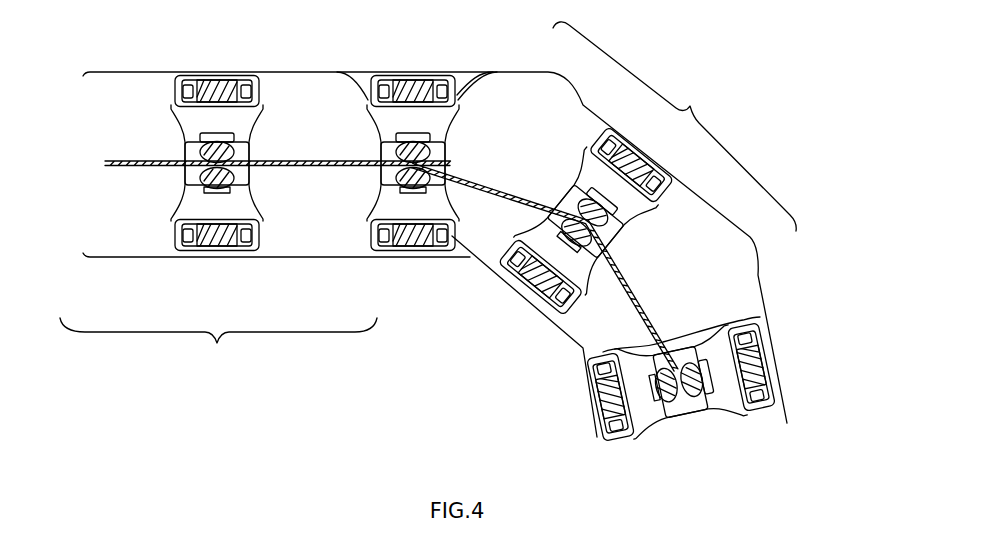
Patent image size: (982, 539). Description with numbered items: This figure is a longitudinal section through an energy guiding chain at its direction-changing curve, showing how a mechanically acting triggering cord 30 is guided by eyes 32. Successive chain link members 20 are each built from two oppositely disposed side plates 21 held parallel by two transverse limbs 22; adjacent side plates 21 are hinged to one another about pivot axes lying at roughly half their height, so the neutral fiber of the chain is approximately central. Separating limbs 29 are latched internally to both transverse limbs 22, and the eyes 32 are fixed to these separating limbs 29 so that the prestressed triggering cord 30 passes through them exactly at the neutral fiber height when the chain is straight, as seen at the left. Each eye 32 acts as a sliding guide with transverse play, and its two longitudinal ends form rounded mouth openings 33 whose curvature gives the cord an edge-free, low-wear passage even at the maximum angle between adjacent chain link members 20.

The chain link member 20 is at (428, 195).
The side plate 21 is at (296, 114).
The transverse limb 22 is at (220, 75).
The separating limb 29 is at (190, 125).
The triggering cord 30 is at (334, 158).
The eye 32 is at (178, 152).
The mouth opening 33 is at (188, 172).